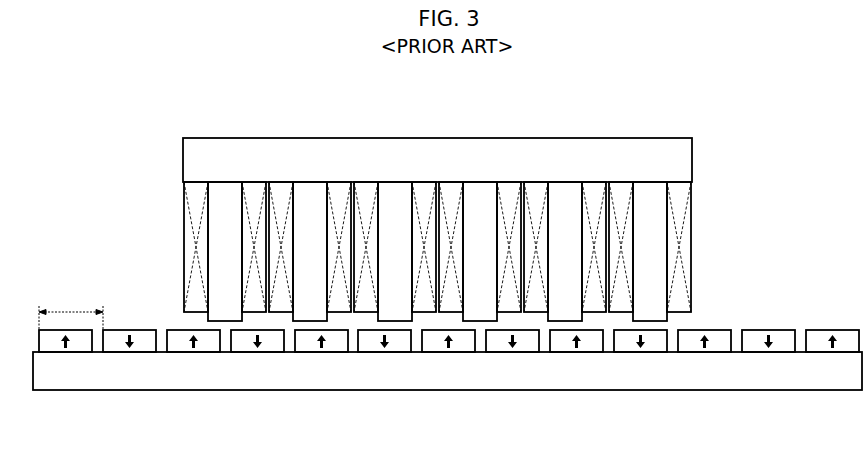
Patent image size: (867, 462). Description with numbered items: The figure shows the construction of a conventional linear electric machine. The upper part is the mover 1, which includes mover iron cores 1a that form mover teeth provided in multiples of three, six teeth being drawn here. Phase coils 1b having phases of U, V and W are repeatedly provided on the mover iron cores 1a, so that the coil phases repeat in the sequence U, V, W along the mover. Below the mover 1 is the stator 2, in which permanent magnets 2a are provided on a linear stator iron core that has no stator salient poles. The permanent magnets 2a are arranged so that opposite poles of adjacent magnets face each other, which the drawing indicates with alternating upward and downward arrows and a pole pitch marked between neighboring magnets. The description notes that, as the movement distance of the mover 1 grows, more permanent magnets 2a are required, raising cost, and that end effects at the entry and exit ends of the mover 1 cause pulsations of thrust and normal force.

The mover 1 is at (474, 135).
The mover iron cores 1a is at (486, 230).
The phase coils 1b is at (474, 247).
The stator 2 is at (447, 313).
The permanent magnets 2a is at (449, 313).